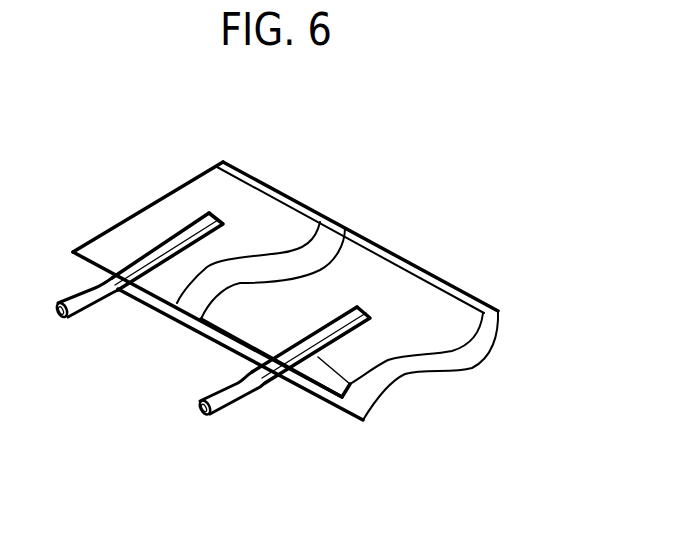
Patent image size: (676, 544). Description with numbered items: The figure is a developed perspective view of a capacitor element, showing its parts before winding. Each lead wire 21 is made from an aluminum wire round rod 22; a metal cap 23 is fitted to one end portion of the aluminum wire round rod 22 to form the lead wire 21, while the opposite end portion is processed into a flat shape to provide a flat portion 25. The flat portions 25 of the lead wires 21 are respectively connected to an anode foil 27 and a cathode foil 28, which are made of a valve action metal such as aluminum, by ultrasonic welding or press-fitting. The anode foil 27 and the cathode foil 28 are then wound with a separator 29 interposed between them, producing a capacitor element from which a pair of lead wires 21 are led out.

The lead wire 21 is at (456, 423).
The aluminum wire round rod 22 is at (240, 386).
The metal cap 23 is at (217, 406).
The flat portion 25 is at (348, 397).
The anode foil 27 is at (393, 278).
The cathode foil 28 is at (277, 210).
The separator 29 is at (330, 235).